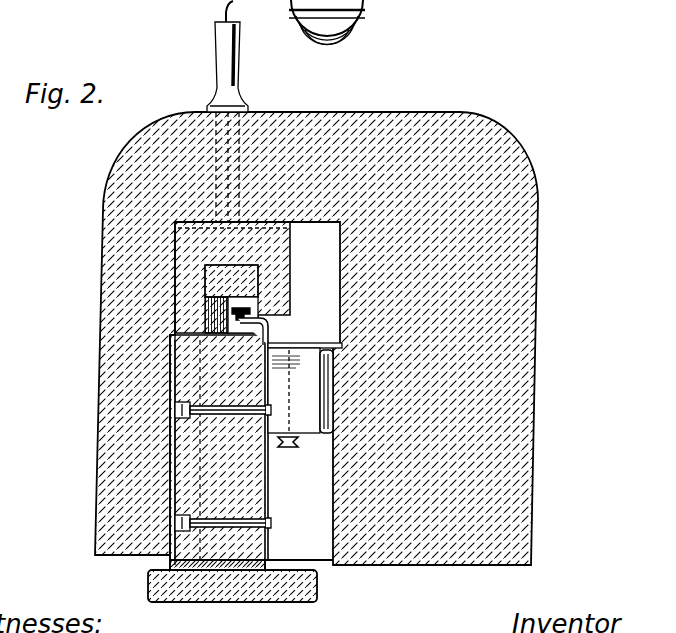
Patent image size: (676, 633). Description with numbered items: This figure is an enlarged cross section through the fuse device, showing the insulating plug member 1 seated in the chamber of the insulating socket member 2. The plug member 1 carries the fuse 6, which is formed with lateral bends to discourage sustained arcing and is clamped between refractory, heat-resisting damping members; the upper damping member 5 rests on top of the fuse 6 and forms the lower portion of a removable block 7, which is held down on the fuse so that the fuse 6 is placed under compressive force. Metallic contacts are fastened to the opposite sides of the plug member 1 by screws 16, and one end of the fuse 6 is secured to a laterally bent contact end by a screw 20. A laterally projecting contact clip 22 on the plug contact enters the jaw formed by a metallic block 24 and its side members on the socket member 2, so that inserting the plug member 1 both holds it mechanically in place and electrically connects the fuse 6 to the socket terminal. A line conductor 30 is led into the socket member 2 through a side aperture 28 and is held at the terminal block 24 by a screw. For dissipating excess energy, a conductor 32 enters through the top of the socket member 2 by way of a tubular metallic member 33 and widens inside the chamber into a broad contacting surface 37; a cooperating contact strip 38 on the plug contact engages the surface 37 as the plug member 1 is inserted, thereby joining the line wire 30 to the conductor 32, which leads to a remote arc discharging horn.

The plug member 1 is at (310, 588).
The socket member 2 is at (370, 112).
The upper damping member 5 is at (258, 270).
The fuse 6 is at (250, 330).
The removable block 7 is at (185, 282).
The screws 16 is at (271, 412).
The screw 20 is at (240, 316).
The contact clip 22 is at (292, 457).
The metallic block 24 is at (300, 352).
The side aperture 28 is at (333, 413).
The conductor 30 is at (289, 378).
The conductor 32 is at (226, 14).
The tubular metallic member 33 is at (240, 75).
The broad contacting surface 37 is at (205, 235).
The contact strip 38 is at (232, 318).